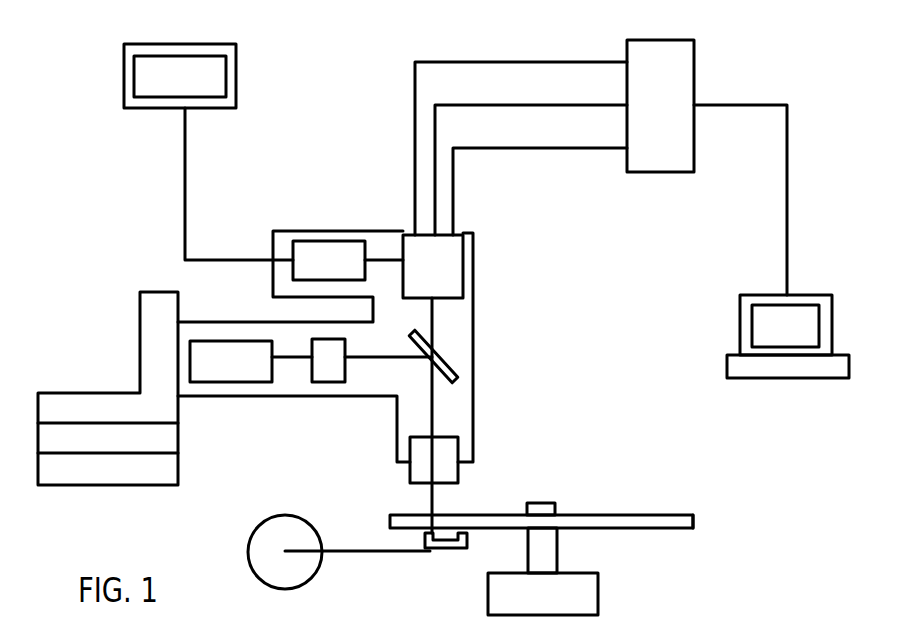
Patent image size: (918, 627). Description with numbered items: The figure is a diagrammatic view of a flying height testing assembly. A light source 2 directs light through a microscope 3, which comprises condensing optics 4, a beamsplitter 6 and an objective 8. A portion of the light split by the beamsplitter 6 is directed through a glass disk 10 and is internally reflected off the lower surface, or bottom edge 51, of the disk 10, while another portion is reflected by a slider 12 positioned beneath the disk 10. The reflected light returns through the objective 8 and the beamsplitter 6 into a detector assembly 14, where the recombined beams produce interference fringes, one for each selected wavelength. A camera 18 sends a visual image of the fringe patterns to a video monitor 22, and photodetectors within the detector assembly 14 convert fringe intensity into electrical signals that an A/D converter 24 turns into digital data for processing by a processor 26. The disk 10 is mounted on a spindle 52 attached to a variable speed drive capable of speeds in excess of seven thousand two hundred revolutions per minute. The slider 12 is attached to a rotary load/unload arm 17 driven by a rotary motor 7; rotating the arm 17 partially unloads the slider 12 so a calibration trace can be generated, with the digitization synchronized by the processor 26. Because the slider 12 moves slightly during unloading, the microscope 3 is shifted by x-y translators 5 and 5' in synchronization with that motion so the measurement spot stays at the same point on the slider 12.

The light source 2 is at (237, 341).
The microscope 3 is at (284, 224).
The condensing optics 4 is at (323, 383).
The x-y translator 5 is at (135, 388).
The x-y translator 5' is at (568, 594).
The beamsplitter 6 is at (445, 357).
The rotary motor 7 is at (252, 536).
The objective 8 is at (458, 473).
The glass disk 10 is at (578, 518).
The slider 12 is at (437, 553).
The detector assembly 14 is at (473, 233).
The rotary load/unload arm 17 is at (372, 554).
The camera 18 is at (322, 241).
The video monitor 22 is at (236, 64).
The A/D converter 24 is at (694, 62).
The processor 26 is at (795, 293).
The bottom edge of disk 51 is at (670, 529).
The spindle 52 is at (557, 549).